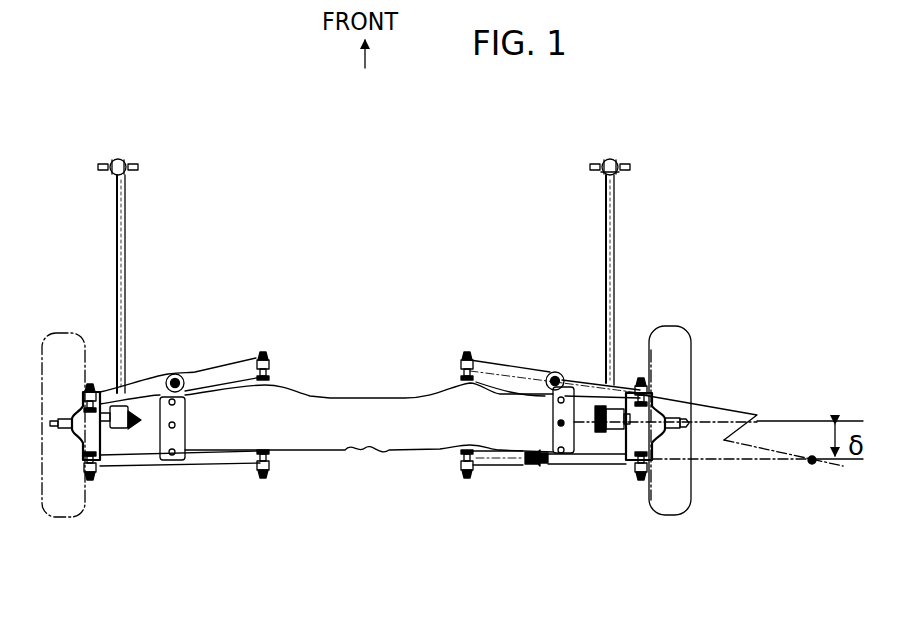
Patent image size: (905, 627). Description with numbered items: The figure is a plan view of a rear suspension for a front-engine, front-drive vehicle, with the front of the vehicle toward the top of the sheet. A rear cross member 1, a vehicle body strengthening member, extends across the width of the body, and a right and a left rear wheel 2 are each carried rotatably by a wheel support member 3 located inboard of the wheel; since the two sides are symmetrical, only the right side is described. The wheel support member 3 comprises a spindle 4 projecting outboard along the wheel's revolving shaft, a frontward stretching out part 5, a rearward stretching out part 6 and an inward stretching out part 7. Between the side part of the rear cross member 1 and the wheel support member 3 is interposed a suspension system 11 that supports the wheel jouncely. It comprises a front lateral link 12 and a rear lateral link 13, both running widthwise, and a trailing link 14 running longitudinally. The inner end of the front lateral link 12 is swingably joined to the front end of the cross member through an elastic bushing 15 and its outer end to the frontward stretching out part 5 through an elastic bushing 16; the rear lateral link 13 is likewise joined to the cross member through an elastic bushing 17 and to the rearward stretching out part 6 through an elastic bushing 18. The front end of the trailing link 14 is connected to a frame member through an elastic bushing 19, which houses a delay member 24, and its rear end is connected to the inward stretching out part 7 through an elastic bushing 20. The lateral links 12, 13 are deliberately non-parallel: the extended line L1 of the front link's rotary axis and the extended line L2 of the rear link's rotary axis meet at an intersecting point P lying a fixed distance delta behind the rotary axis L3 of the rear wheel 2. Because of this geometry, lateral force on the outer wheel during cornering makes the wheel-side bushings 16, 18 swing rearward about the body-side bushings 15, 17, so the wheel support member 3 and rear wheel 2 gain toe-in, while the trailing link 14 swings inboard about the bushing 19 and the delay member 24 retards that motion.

The rear cross member 1 is at (350, 392).
The rear wheel 2 is at (47, 335).
The wheel support member 3 is at (103, 443).
The spindle 4 is at (691, 400).
The frontward stretching out part 5 is at (673, 396).
The rearward stretching out part 6 is at (652, 452).
The inward stretching out part 7 is at (638, 378).
The suspension system 11 is at (571, 506).
The front lateral link 12 is at (535, 368).
The rear lateral link 13 is at (575, 465).
The trailing link 14 is at (618, 273).
The elastic bushing 15 is at (468, 354).
The elastic bushing 16 is at (653, 389).
The elastic bushing 17 is at (453, 457).
The elastic bushing 18 is at (657, 462).
The elastic bushing 19 is at (611, 155).
The elastic bushing 20 is at (612, 446).
The delay member 24 is at (618, 174).
The extended line of the rotary axis of the front lateral link L1 is at (739, 404).
The extended line of the rotary axis of the rear lateral link L2 is at (846, 464).
The rotary axis of the rear wheel L3 is at (845, 418).
The intersecting point P is at (812, 464).